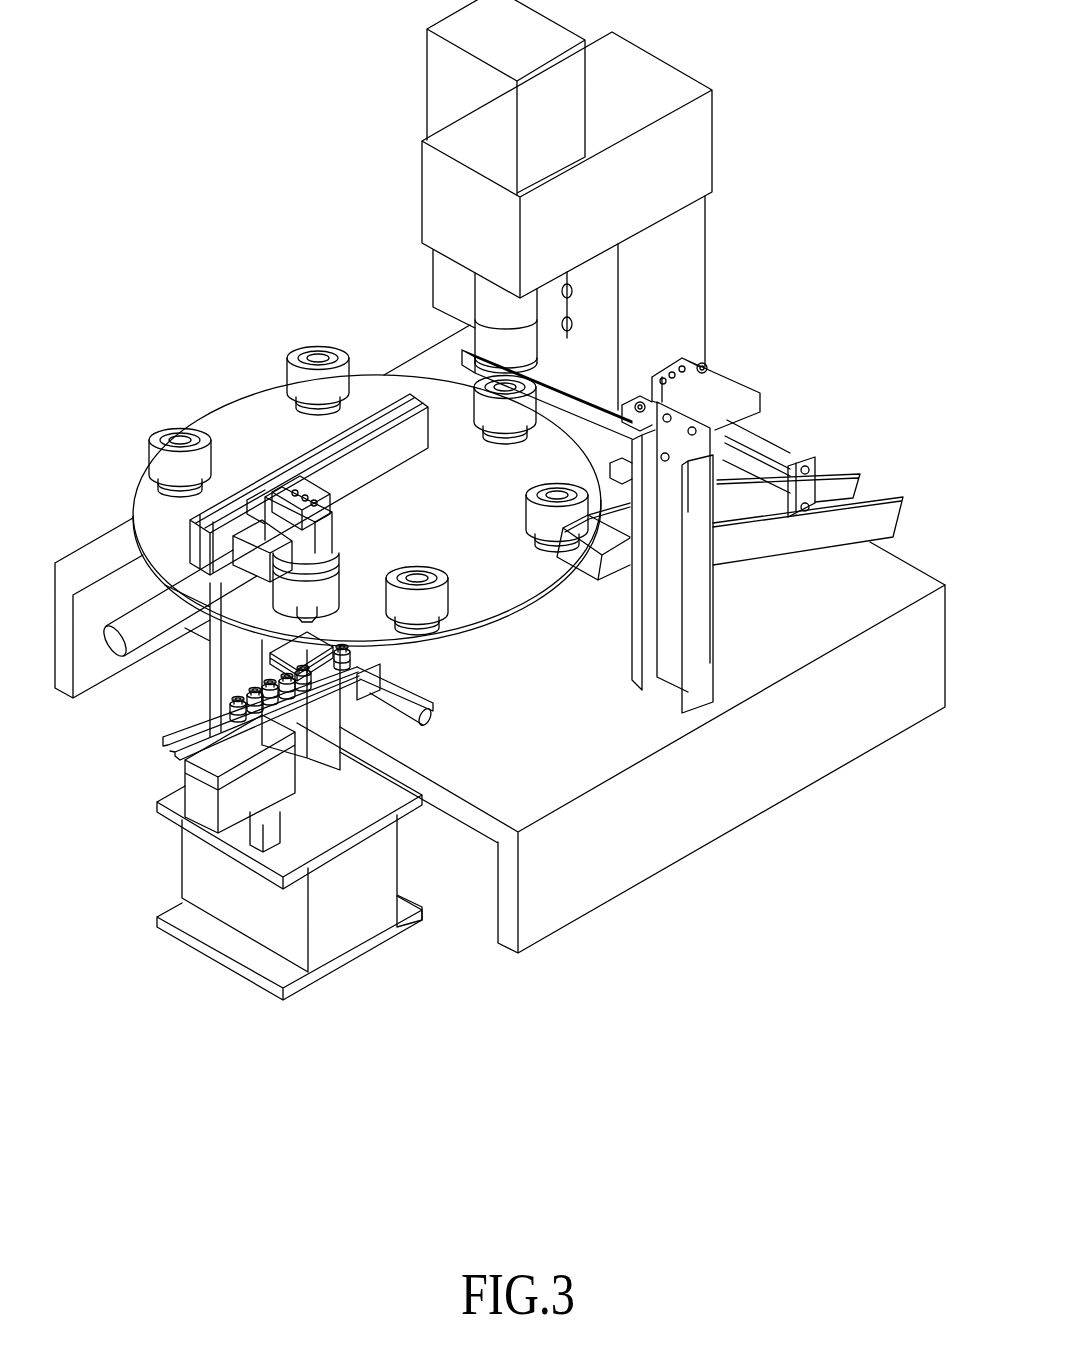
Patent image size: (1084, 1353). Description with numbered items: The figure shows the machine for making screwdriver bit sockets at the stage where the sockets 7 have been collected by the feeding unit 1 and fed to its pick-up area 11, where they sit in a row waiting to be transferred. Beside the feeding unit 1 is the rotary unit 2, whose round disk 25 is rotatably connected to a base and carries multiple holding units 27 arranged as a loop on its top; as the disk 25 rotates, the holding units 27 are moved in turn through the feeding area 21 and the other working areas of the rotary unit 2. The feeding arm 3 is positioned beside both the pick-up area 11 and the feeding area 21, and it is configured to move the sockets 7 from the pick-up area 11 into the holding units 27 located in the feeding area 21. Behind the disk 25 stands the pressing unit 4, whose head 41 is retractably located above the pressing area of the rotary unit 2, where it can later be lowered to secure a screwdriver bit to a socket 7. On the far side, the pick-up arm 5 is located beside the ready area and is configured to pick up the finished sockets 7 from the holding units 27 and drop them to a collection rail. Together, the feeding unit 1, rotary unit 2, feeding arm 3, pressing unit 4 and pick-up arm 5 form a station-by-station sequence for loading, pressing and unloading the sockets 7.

The feeding unit 1 is at (172, 723).
The pick-up area 11 is at (364, 657).
The rotary unit 2 is at (198, 360).
The feeding area 21 is at (462, 605).
The round disk 25 is at (217, 425).
The holding units 27 is at (288, 347).
The feeding arm 3 is at (347, 546).
The pressing unit 4 is at (718, 156).
The head 41 is at (482, 338).
The pick-up arm 5 is at (777, 410).
The socket 7 is at (345, 645).